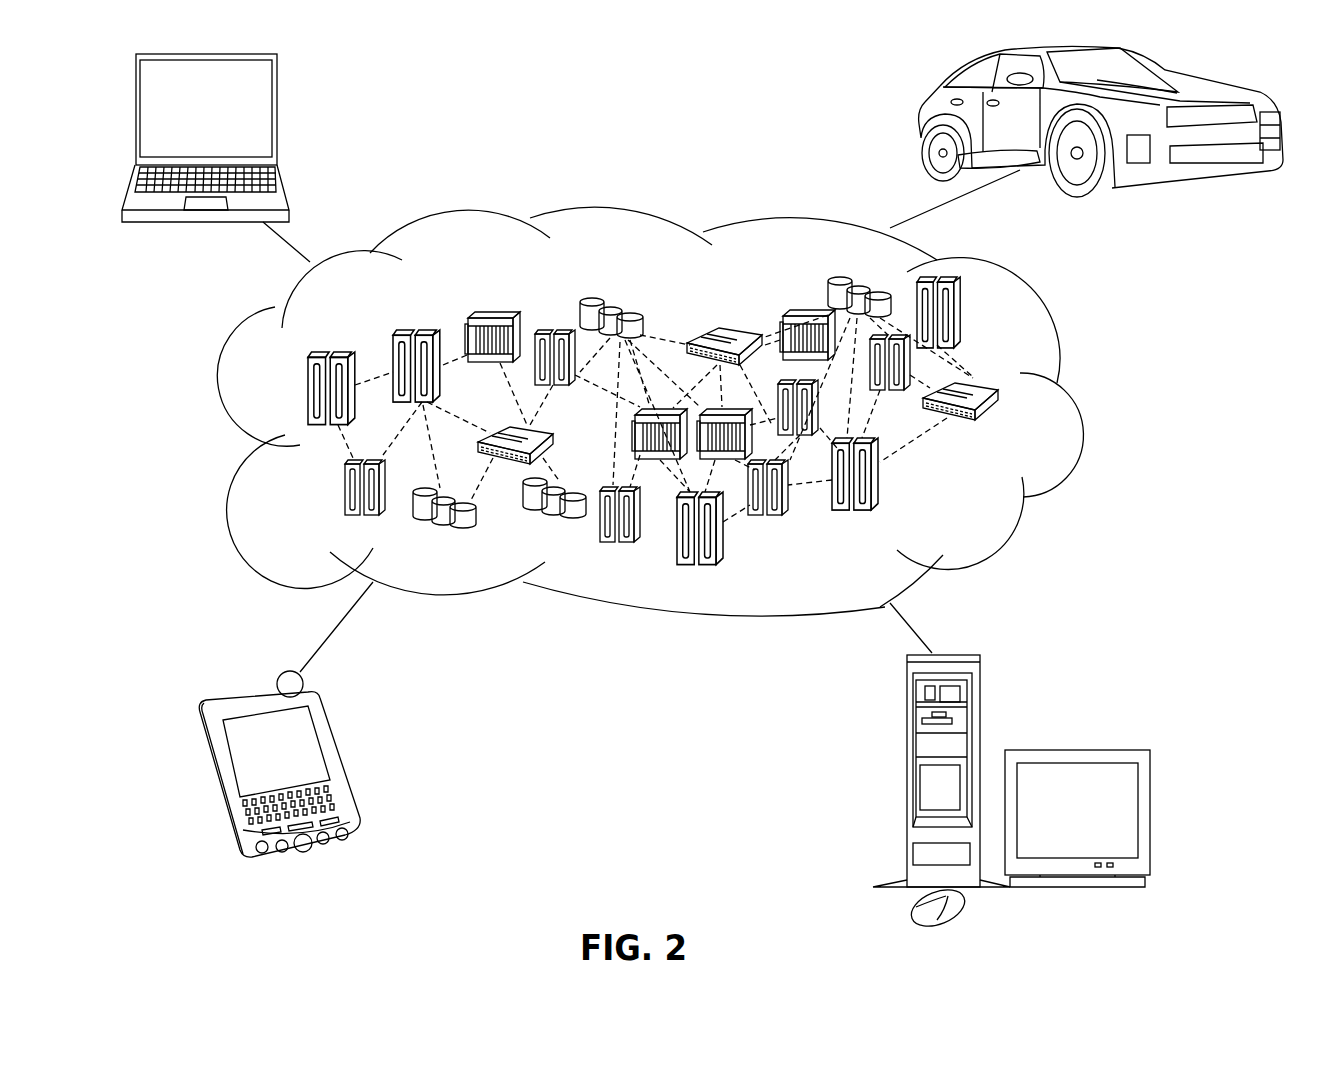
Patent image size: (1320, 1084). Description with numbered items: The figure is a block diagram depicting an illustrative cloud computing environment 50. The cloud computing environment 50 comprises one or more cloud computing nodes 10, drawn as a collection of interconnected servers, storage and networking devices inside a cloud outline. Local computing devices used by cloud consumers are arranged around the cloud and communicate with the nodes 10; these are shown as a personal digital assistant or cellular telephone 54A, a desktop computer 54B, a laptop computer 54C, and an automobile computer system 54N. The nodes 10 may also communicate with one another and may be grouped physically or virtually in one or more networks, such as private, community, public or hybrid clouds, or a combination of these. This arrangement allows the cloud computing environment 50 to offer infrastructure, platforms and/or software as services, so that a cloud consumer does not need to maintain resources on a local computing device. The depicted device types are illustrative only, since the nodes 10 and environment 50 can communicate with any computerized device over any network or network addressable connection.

The cloud computing node 10 is at (987, 506).
The cloud computing environment 50 is at (1072, 400).
The personal digital assistant or cellular telephone 54A is at (332, 728).
The desktop computer 54B is at (907, 717).
The laptop computer 54C is at (277, 92).
The automobile computer system 54N is at (918, 112).